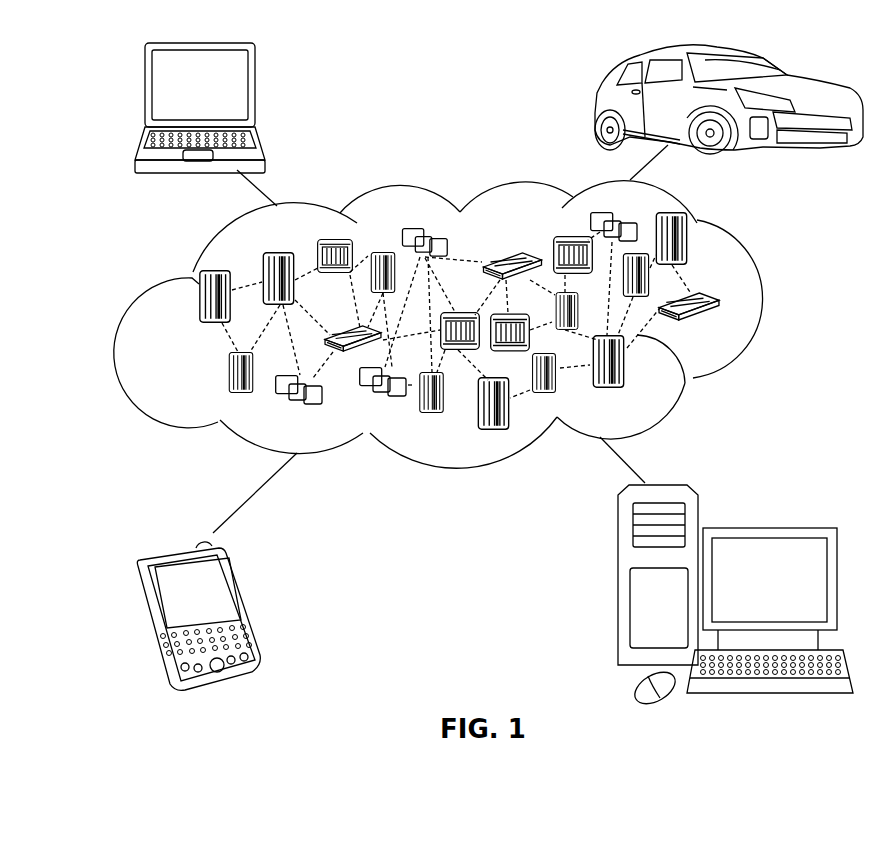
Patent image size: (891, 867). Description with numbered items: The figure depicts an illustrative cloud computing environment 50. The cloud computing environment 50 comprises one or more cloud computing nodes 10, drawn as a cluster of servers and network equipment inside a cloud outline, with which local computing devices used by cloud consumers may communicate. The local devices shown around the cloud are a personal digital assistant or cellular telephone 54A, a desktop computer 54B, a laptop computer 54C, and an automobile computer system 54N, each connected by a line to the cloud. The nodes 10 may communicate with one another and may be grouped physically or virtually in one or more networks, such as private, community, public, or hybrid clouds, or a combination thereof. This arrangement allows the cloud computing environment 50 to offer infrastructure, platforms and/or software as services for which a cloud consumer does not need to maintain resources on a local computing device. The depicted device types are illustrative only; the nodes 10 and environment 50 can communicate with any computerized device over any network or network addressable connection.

The cloud computing node 10 is at (725, 327).
The cloud computing environment 50 is at (767, 307).
The personal digital assistant or cellular telephone 54A is at (246, 604).
The desktop computer 54B is at (767, 528).
The laptop computer 54C is at (255, 92).
The automobile computer system 54N is at (590, 108).